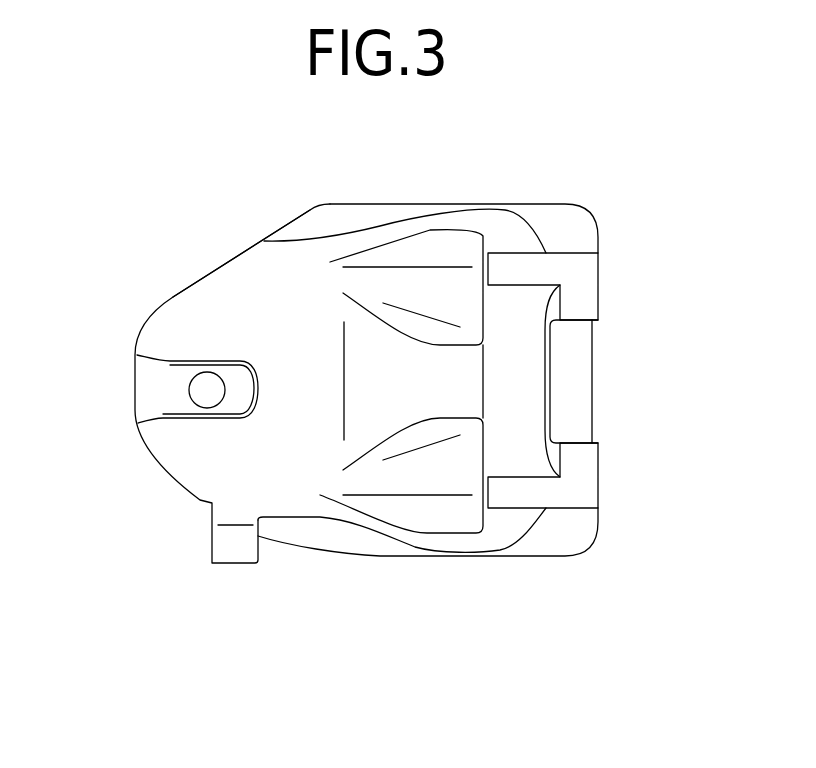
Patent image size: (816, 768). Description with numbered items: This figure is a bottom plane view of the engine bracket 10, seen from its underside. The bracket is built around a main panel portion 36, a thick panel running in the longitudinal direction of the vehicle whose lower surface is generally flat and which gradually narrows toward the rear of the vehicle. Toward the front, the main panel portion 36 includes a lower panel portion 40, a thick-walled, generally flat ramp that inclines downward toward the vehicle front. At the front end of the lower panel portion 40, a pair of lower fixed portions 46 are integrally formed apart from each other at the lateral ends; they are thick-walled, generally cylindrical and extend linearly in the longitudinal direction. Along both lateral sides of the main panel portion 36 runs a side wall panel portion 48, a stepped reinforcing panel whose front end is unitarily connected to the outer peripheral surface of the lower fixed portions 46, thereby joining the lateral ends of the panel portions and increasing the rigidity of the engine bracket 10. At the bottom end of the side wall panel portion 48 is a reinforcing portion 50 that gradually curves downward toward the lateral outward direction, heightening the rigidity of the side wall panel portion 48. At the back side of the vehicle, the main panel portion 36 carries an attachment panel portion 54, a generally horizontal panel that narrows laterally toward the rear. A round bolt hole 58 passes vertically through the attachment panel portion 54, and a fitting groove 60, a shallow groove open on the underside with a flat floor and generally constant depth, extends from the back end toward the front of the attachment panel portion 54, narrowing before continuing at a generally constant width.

The engine bracket 10 is at (665, 152).
The main panel portion 36 is at (294, 466).
The lower panel portion 40 is at (524, 445).
The lower fixed portions 46 is at (587, 285).
The side wall panel portion 48 is at (550, 213).
The reinforcing portion 50 is at (432, 218).
The attachment panel portion 54 is at (188, 310).
The bolt hole 58 is at (203, 392).
The fitting groove 60 is at (170, 413).